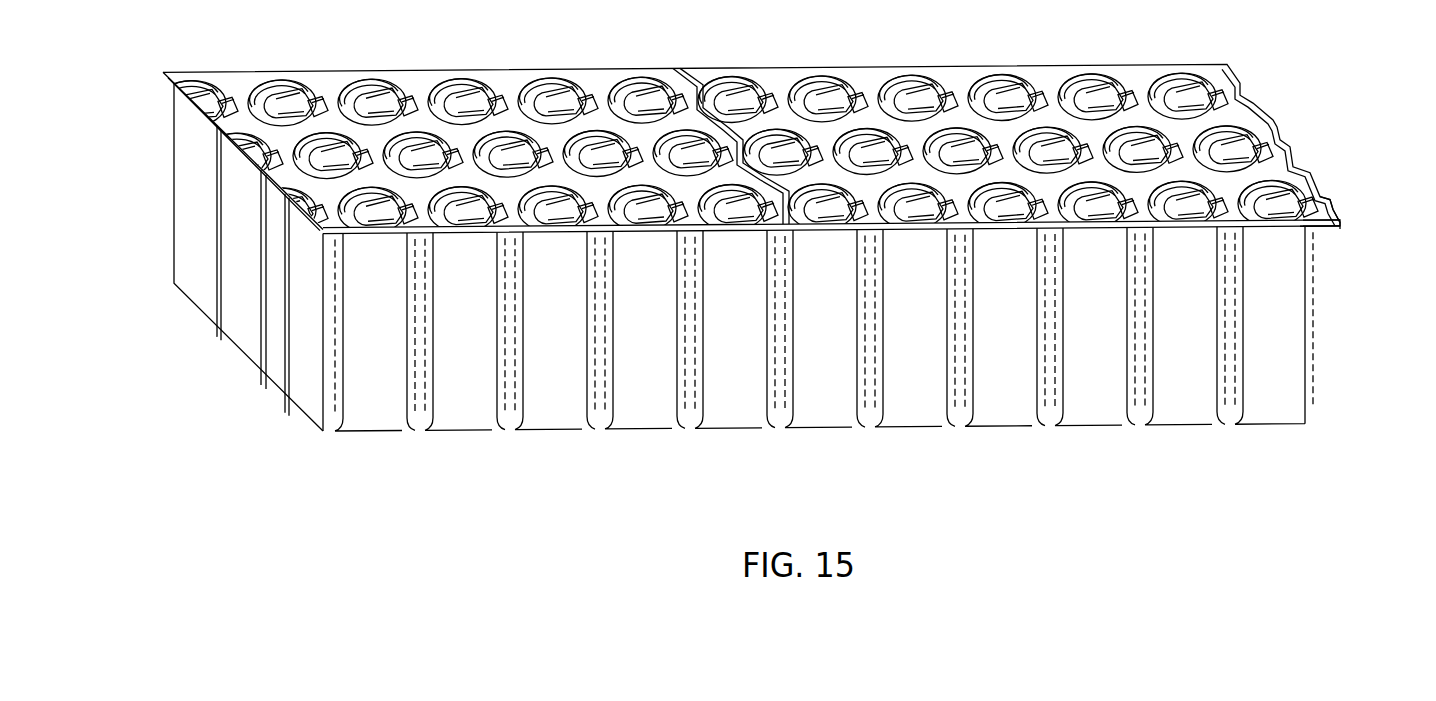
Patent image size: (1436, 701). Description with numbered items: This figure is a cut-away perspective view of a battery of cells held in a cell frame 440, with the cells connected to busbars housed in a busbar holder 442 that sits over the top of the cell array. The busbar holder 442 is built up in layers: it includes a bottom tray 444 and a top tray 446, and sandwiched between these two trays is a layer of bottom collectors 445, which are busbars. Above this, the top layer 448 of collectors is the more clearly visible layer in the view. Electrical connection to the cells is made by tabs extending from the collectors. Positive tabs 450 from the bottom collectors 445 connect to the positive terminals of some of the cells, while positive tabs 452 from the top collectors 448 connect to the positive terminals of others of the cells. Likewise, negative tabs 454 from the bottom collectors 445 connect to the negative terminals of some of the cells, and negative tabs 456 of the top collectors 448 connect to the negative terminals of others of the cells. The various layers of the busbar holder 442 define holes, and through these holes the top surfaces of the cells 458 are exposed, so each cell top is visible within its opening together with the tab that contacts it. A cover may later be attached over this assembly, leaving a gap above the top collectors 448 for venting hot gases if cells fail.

The cell frame 440 is at (1315, 345).
The busbar holder 442 is at (1273, 90).
The bottom tray 444 is at (1323, 231).
The bottom collectors 445 is at (1340, 226).
The top tray 446 is at (1330, 213).
The top layer of collectors 448 is at (1295, 175).
The positive tabs 450 is at (1182, 93).
The positive tabs 452 is at (917, 93).
The negative tabs 454 is at (852, 222).
The negative tabs 456 is at (760, 223).
The top surfaces of the cells 458 is at (622, 103).